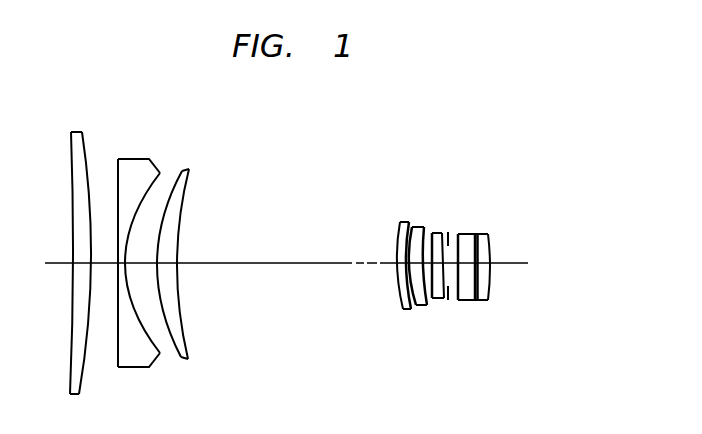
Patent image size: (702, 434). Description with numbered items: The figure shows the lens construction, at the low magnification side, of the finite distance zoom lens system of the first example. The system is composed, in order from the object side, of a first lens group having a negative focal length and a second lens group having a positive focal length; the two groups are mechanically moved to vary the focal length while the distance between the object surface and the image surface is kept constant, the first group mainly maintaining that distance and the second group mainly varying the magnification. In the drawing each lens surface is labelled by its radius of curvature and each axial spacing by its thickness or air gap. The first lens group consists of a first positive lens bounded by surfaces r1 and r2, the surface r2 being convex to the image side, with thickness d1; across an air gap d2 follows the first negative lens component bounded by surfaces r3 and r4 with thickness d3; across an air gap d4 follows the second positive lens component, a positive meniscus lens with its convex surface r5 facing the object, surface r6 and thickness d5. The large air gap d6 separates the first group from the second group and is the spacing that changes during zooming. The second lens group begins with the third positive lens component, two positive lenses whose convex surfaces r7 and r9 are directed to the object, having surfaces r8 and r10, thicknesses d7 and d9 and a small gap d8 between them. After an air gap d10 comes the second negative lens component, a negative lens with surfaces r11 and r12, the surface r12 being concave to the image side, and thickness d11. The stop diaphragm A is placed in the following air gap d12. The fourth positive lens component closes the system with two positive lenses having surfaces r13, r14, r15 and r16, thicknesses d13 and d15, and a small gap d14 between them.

The radius of curvature of first lens surface r1 is at (71, 132).
The radius of curvature of second lens surface r2 is at (82, 132).
The radius of curvature of third lens surface r3 is at (118, 159).
The radius of curvature of fourth lens surface r4 is at (160, 173).
The radius of curvature of fifth lens surface r5 is at (182, 171).
The radius of curvature of sixth lens surface r6 is at (189, 169).
The radius of curvature of seventh lens surface r7 is at (400, 222).
The radius of curvature of eighth lens surface r8 is at (409, 222).
The radius of curvature of ninth lens surface r9 is at (412, 227).
The radius of curvature of tenth lens surface r10 is at (424, 227).
The radius of curvature of eleventh lens surface r11 is at (432, 233).
The radius of curvature of twelfth lens surface r12 is at (442, 233).
The radius of curvature of thirteenth lens surface r13 is at (460, 234).
The radius of curvature of fourteenth lens surface r14 is at (476, 234).
The radius of curvature of fifteenth lens surface r15 is at (478, 234).
The radius of curvature of sixteenth lens surface r16 is at (488, 234).
The lens thickness d1 is at (80, 264).
The air gap d2 is at (105, 264).
The lens thickness d3 is at (126, 266).
The air gap d4 is at (143, 264).
The lens thickness d5 is at (166, 265).
The air gap d6 is at (242, 265).
The lens thickness d7 is at (402, 309).
The air gap d8 is at (414, 305).
The lens thickness d9 is at (426, 300).
The air gap d10 is at (430, 298).
The lens thickness d11 is at (443, 298).
The air gap d12 is at (455, 302).
The lens thickness d13 is at (470, 301).
The air gap d14 is at (482, 301).
The lens thickness d15 is at (492, 298).
The stop diaphragm A is at (448, 232).